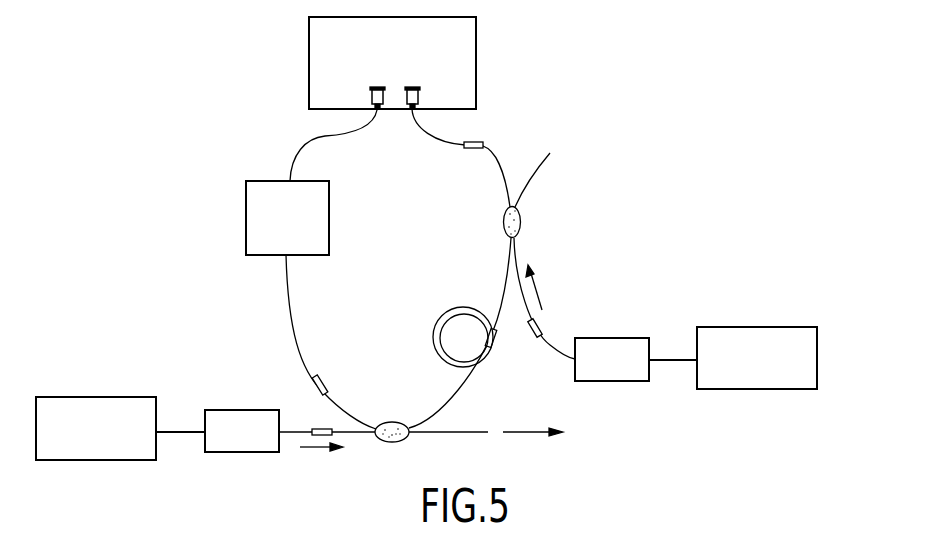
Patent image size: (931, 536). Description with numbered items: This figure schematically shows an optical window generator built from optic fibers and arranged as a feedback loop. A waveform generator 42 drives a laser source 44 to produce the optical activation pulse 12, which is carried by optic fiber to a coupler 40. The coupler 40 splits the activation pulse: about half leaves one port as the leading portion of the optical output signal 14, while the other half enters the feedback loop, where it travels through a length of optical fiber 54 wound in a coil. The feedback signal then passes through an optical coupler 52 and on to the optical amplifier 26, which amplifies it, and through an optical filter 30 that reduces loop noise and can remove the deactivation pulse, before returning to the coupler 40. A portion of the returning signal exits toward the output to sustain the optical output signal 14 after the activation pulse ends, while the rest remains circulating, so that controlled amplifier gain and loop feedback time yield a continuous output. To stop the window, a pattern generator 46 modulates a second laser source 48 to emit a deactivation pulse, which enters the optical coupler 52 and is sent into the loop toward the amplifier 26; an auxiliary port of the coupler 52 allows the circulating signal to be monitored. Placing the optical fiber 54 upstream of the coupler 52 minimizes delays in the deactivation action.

The optical activation pulse 12 is at (327, 456).
The optical output signal 14 is at (486, 448).
The optical amplifier 26 is at (407, 76).
The optical filter 30 is at (287, 218).
The coupler 40 is at (393, 422).
The waveform generator 42 is at (98, 397).
The laser source 44 is at (238, 410).
The pattern generator 46 is at (755, 327).
The laser source 48 is at (615, 338).
The optical coupler 52 is at (504, 221).
The optical fiber 54 is at (443, 323).